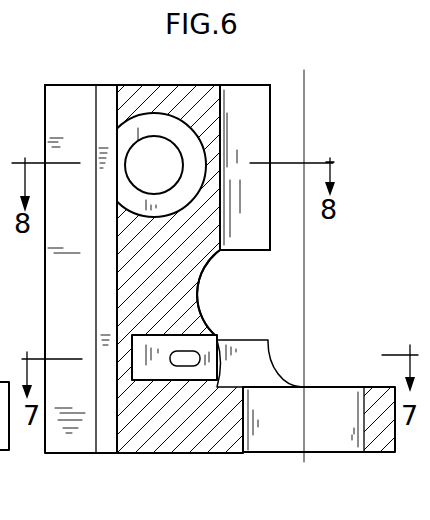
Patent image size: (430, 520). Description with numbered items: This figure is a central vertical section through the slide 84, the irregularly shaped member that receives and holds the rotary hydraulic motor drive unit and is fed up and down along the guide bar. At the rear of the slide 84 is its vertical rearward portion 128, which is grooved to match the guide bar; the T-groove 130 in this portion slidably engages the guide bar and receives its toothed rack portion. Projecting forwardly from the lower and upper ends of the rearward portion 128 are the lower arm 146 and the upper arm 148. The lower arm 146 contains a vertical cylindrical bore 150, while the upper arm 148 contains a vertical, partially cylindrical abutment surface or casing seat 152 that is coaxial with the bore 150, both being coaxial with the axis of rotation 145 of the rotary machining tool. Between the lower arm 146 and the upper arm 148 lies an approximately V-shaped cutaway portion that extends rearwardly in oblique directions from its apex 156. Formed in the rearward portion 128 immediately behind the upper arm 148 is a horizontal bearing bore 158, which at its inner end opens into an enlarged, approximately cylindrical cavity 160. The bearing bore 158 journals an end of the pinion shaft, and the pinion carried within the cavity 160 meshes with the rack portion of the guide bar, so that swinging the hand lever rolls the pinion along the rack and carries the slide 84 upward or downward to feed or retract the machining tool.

The slide 84 is at (140, 83).
The vertical rearward portion 128 is at (178, 90).
The T-groove 130 is at (67, 103).
The axis of rotation 145 is at (305, 277).
The lower arm 146 is at (387, 387).
The upper arm 148 is at (272, 138).
The vertical cylindrical bore 150 is at (347, 453).
The casing seat 152 is at (260, 100).
The apex 156 is at (199, 287).
The bearing bore 158 is at (152, 137).
The cylindrical cavity 160 is at (117, 125).